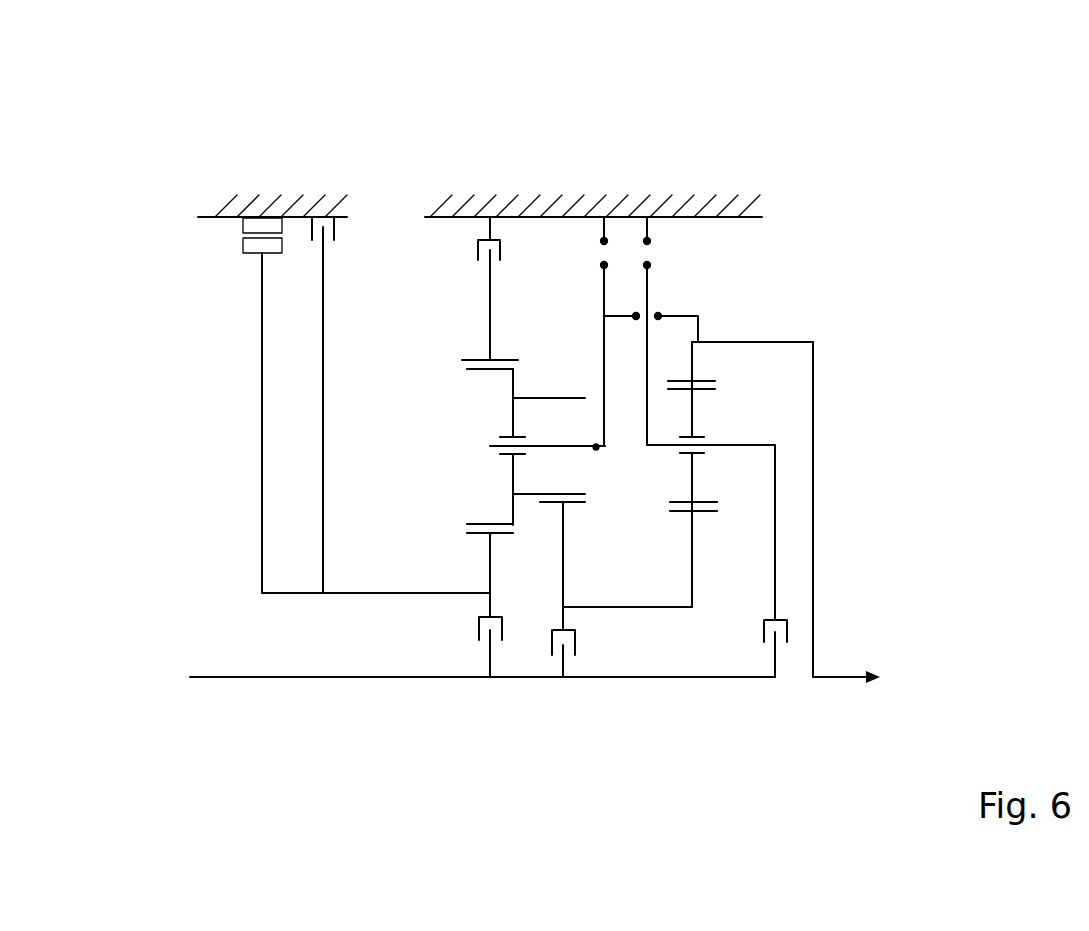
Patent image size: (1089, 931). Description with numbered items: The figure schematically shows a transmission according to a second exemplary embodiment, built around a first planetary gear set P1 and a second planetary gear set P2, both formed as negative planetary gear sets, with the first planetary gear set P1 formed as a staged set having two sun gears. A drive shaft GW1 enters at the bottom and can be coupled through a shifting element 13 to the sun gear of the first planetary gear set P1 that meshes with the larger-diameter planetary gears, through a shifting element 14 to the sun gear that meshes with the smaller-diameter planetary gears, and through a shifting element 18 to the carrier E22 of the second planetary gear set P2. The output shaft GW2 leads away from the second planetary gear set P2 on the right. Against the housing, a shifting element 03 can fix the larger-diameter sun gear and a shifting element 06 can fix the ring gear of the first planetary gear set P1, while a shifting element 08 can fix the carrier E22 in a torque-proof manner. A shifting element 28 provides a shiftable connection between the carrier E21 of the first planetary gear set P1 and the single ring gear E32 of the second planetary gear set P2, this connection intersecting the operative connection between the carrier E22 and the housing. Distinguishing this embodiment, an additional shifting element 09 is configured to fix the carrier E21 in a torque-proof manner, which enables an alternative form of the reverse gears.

The shifting element 03 is at (358, 320).
The shifting element 06 is at (470, 203).
The first planetary gear set P1 is at (523, 290).
The additional shifting element 09 is at (599, 246).
The additional shifting element 28 is at (726, 246).
The shifting element 08 is at (600, 149).
The ring gear E32 is at (863, 289).
The second planetary gear set P2 is at (857, 412).
The carrier E22 is at (852, 456).
The drive shaft GW1 is at (482, 742).
The shifting element 13 is at (479, 670).
The shifting element 14 is at (610, 655).
The carrier E21 is at (563, 626).
The shifting element 18 is at (770, 714).
The output shaft GW2 is at (845, 575).